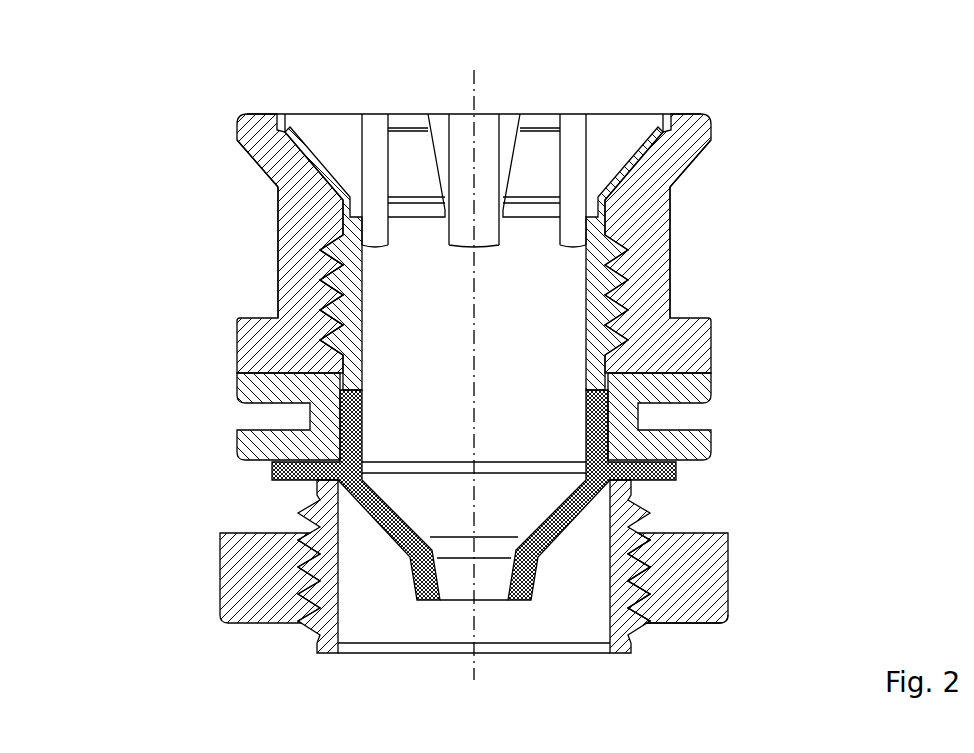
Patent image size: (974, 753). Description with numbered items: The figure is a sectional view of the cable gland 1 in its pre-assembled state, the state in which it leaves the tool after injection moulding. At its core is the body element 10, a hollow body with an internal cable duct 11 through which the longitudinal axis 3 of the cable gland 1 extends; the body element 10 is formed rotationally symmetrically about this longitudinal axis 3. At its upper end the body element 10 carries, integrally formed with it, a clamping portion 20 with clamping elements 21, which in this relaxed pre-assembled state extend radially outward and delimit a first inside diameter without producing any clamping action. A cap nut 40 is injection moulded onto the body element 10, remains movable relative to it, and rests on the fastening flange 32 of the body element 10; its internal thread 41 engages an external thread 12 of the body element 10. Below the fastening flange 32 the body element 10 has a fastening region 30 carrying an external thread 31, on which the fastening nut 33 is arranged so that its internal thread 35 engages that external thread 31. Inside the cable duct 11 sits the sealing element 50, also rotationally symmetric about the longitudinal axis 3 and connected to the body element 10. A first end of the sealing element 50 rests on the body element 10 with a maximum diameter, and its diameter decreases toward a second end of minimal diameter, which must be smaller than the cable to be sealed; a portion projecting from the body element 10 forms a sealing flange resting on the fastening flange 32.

The cable gland 1 is at (733, 103).
The longitudinal axis 3 is at (470, 76).
The body element 10 is at (668, 262).
The cable duct 11 is at (550, 283).
The external thread 12 is at (280, 286).
The clamping portion 20 is at (573, 167).
The clamping elements 21 is at (563, 180).
The fastening region 30 is at (613, 502).
The external thread 31 is at (727, 536).
The fastening flange 32 is at (655, 397).
The fastening nut 33 is at (643, 590).
The internal thread 35 is at (727, 625).
The cap nut 40 is at (278, 197).
The internal thread 41 is at (343, 260).
The sealing element 50 is at (612, 448).